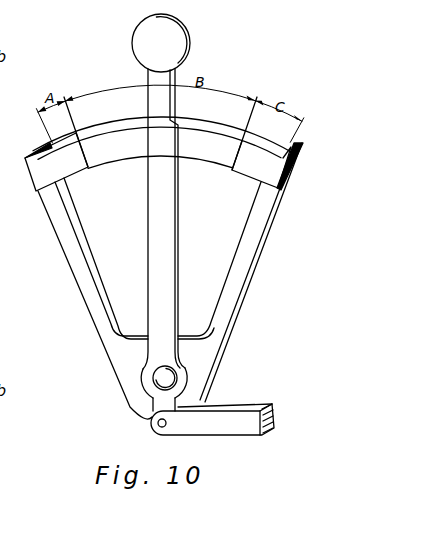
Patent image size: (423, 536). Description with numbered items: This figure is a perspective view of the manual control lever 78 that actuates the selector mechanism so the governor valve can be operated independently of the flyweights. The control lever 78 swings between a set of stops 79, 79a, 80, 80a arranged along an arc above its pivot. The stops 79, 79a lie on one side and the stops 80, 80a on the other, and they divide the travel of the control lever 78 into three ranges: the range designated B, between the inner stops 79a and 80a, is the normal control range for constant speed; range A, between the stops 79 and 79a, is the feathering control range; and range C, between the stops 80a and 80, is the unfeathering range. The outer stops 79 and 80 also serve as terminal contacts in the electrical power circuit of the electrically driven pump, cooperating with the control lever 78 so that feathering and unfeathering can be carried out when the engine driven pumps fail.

The control lever 78 is at (191, 39).
The stop 79 is at (28, 155).
The stop 79a is at (89, 170).
The stop 80 is at (291, 146).
The stop 80a is at (233, 170).